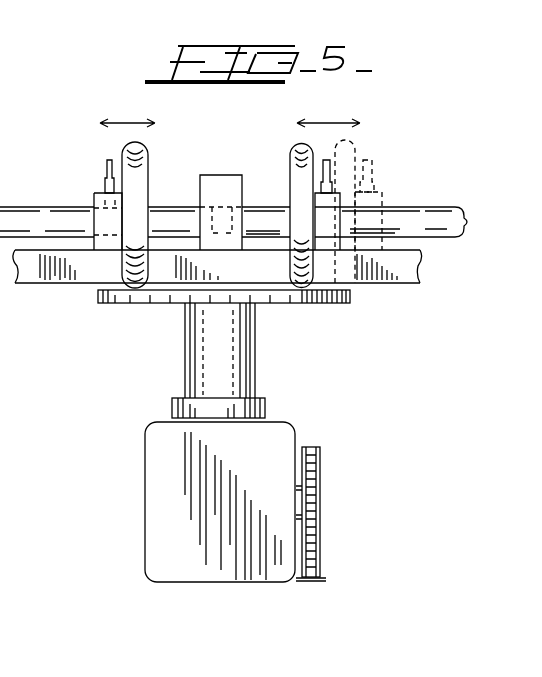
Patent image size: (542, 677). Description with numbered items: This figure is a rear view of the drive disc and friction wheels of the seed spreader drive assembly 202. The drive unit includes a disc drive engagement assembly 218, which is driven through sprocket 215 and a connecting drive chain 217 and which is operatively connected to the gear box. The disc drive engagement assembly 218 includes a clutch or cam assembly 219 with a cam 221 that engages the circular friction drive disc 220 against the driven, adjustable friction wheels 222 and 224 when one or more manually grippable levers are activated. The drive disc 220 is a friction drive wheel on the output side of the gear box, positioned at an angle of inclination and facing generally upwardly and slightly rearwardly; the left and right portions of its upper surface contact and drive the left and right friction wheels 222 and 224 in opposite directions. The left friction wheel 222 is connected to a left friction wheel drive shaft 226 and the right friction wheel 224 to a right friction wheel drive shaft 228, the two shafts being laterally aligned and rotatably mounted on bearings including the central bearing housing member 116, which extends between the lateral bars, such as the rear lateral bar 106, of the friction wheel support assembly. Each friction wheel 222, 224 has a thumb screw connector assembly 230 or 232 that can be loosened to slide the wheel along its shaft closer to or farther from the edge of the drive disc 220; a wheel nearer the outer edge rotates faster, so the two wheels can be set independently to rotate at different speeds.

The rear lateral bar 106 is at (33, 284).
The central bearing housing member 116 is at (215, 172).
The seed spreader drive assembly 202 is at (310, 317).
The sprocket 215 is at (320, 490).
The connecting drive chain 217 is at (312, 445).
The disc drive engagement assembly 218 is at (145, 540).
The clutch or cam assembly 219 is at (255, 397).
The circular friction drive disc 220 is at (165, 305).
The cam 221 is at (255, 304).
The left friction wheel 222 is at (148, 168).
The right friction wheel 224 is at (295, 162).
The left friction wheel drive shaft 226 is at (32, 207).
The right friction wheel drive shaft 228 is at (425, 207).
The thumb screw connector assembly 230 is at (103, 192).
The thumb screw connector assembly 232 is at (332, 193).